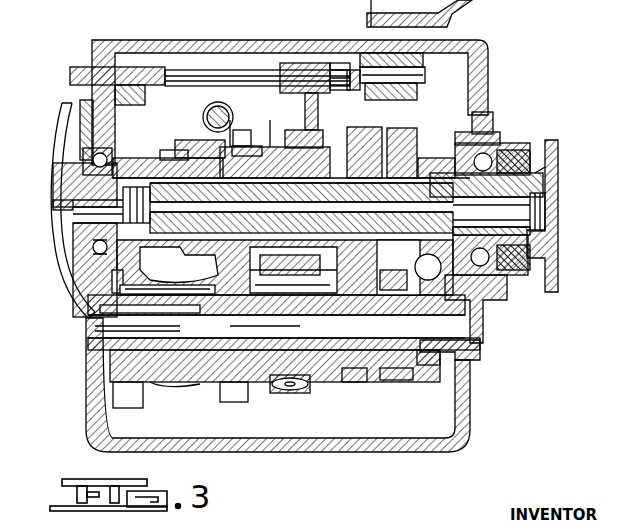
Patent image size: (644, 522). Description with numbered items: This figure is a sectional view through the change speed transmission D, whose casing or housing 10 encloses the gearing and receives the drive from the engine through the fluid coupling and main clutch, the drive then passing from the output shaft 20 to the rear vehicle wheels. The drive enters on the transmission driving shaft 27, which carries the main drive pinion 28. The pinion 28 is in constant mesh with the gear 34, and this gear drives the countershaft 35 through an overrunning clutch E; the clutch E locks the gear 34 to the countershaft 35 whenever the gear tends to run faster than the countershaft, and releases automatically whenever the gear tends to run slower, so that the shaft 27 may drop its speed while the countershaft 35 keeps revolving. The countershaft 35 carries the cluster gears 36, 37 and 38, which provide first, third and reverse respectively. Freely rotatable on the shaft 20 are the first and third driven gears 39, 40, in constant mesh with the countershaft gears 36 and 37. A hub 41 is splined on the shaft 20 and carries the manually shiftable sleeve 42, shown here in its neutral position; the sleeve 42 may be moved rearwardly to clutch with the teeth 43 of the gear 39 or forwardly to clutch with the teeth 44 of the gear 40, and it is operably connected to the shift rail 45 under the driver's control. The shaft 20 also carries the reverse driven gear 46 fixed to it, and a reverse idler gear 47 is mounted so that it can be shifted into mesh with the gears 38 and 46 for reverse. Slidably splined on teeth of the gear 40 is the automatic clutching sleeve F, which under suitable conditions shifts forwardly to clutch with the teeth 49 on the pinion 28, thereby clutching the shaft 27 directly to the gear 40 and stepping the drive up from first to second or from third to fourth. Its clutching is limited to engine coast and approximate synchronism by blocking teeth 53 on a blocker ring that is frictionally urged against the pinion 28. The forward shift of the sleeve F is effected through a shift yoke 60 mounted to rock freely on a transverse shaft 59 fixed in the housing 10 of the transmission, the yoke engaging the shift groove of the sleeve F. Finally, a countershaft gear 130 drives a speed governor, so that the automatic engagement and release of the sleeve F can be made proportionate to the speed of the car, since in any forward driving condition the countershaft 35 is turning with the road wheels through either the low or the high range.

The housing 10 is at (235, 40).
The output shaft 20 is at (560, 176).
The transmission driving shaft 27 is at (62, 186).
The main drive pinion 28 is at (125, 158).
The gear 34 is at (125, 408).
The countershaft 35 is at (318, 382).
The countershaft gear 36 is at (362, 382).
The countershaft gear 37 is at (230, 402).
The countershaft gear 38 is at (420, 368).
The first driven gear 39 is at (360, 128).
The third driven gear 40 is at (240, 147).
The hub 41 is at (278, 180).
The manually shiftable sleeve 42 is at (298, 135).
The teeth 43 is at (340, 147).
The teeth 44 is at (288, 150).
The shift rail 45 is at (258, 70).
The reverse driven gear 46 is at (398, 104).
The reverse idler gear 47 is at (415, 295).
The teeth 49 is at (135, 168).
The blocking teeth 53 is at (172, 158).
The transverse shaft 59 is at (220, 133).
The shift yoke 60 is at (215, 108).
The countershaft gear 130 is at (303, 290).
The speed ratio transmission D is at (283, 70).
The overrunning clutch E is at (165, 385).
The automatic clutching sleeve F is at (188, 150).